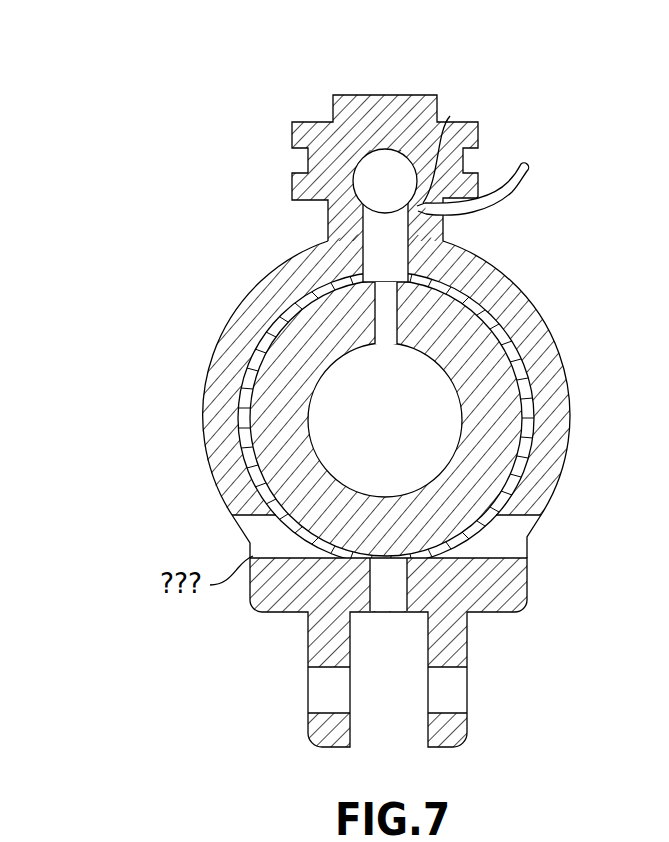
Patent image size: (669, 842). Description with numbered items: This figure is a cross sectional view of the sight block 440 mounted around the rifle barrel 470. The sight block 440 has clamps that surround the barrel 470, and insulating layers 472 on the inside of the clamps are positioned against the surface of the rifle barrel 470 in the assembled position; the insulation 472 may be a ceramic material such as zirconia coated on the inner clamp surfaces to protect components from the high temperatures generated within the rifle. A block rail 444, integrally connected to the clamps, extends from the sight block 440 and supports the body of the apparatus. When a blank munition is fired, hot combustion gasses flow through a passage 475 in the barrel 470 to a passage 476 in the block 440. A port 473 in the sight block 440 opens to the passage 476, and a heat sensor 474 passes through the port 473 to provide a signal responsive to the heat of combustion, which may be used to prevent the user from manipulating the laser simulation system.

The block rail 444 is at (386, 97).
The port 473 is at (450, 118).
The heat sensor 474 is at (524, 168).
The passage 476 is at (371, 198).
The sight block 440 is at (517, 280).
The insulating layers 472 is at (242, 430).
The rifle barrel 470 is at (353, 494).
The passage 475 is at (382, 335).